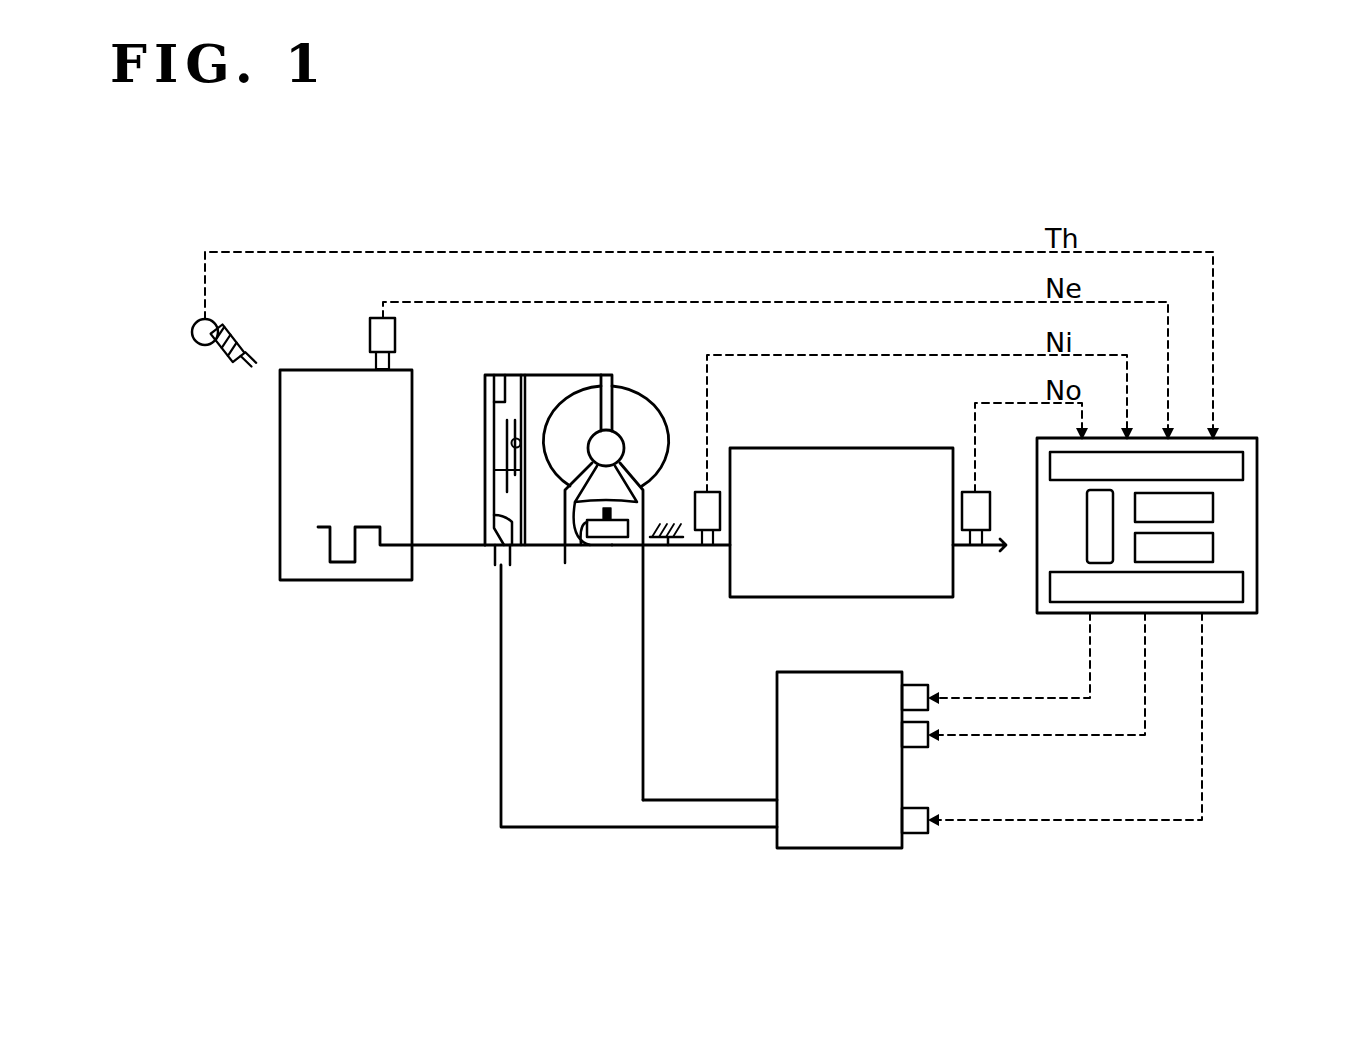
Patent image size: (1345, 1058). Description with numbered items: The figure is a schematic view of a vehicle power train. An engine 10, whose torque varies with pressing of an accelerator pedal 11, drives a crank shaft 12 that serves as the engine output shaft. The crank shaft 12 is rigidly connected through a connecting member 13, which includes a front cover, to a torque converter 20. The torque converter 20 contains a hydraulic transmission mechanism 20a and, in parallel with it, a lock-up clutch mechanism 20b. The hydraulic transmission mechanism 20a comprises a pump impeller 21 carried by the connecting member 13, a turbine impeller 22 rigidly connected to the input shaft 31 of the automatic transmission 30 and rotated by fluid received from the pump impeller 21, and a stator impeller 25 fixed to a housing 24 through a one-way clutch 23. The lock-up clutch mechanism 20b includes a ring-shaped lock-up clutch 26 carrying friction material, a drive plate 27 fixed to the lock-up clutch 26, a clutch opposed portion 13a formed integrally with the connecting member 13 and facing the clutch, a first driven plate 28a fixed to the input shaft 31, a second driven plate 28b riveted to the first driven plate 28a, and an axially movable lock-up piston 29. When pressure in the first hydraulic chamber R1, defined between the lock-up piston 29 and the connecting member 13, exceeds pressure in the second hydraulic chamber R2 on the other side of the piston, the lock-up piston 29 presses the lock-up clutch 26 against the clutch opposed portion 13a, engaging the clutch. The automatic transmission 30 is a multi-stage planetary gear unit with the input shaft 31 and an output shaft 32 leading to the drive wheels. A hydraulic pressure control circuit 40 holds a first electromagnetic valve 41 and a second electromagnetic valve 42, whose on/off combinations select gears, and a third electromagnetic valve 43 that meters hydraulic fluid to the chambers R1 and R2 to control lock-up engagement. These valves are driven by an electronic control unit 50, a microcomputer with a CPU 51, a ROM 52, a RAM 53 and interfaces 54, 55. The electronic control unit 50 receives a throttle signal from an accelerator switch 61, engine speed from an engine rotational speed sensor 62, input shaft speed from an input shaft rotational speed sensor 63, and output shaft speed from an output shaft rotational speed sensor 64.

The engine 10 is at (280, 477).
The accelerator pedal 11 is at (241, 328).
The crank shaft 12 is at (440, 548).
The connecting member 13 is at (486, 388).
The clutch opposed portion 13a is at (522, 376).
The torque converter 20 is at (582, 366).
The hydraulic transmission mechanism 20a is at (655, 395).
The lock-up clutch mechanism 20b is at (487, 378).
The pump impeller 21 is at (630, 392).
The turbine impeller 22 is at (562, 410).
The one-way clutch 23 is at (605, 547).
The housing 24 is at (670, 523).
The stator impeller 25 is at (565, 562).
The lock-up clutch 26 is at (500, 377).
The drive plate 27 is at (490, 400).
The first driven plate 28a is at (497, 527).
The second driven plate 28b is at (505, 465).
The lock-up piston 29 is at (503, 432).
The first hydraulic chamber R1 is at (492, 488).
The second hydraulic chamber R2 is at (560, 526).
The automatic transmission 30 is at (878, 448).
The input shaft 31 is at (700, 548).
The output shaft 32 is at (978, 548).
The hydraulic pressure control circuit 40 is at (771, 766).
The first electromagnetic valve 41 is at (915, 688).
The second electromagnetic valve 42 is at (915, 747).
The third electromagnetic valve 43 is at (915, 833).
The electronic control unit 50 is at (1237, 438).
The CPU 51 is at (1087, 525).
The ROM 52 is at (1213, 505).
The RAM 53 is at (1213, 545).
The interface 54 is at (1257, 465).
The interface 55 is at (1257, 590).
The accelerator switch 61 is at (195, 326).
The engine rotational speed sensor 62 is at (370, 328).
The input shaft rotational speed sensor 63 is at (706, 490).
The output shaft rotational speed sensor 64 is at (990, 505).